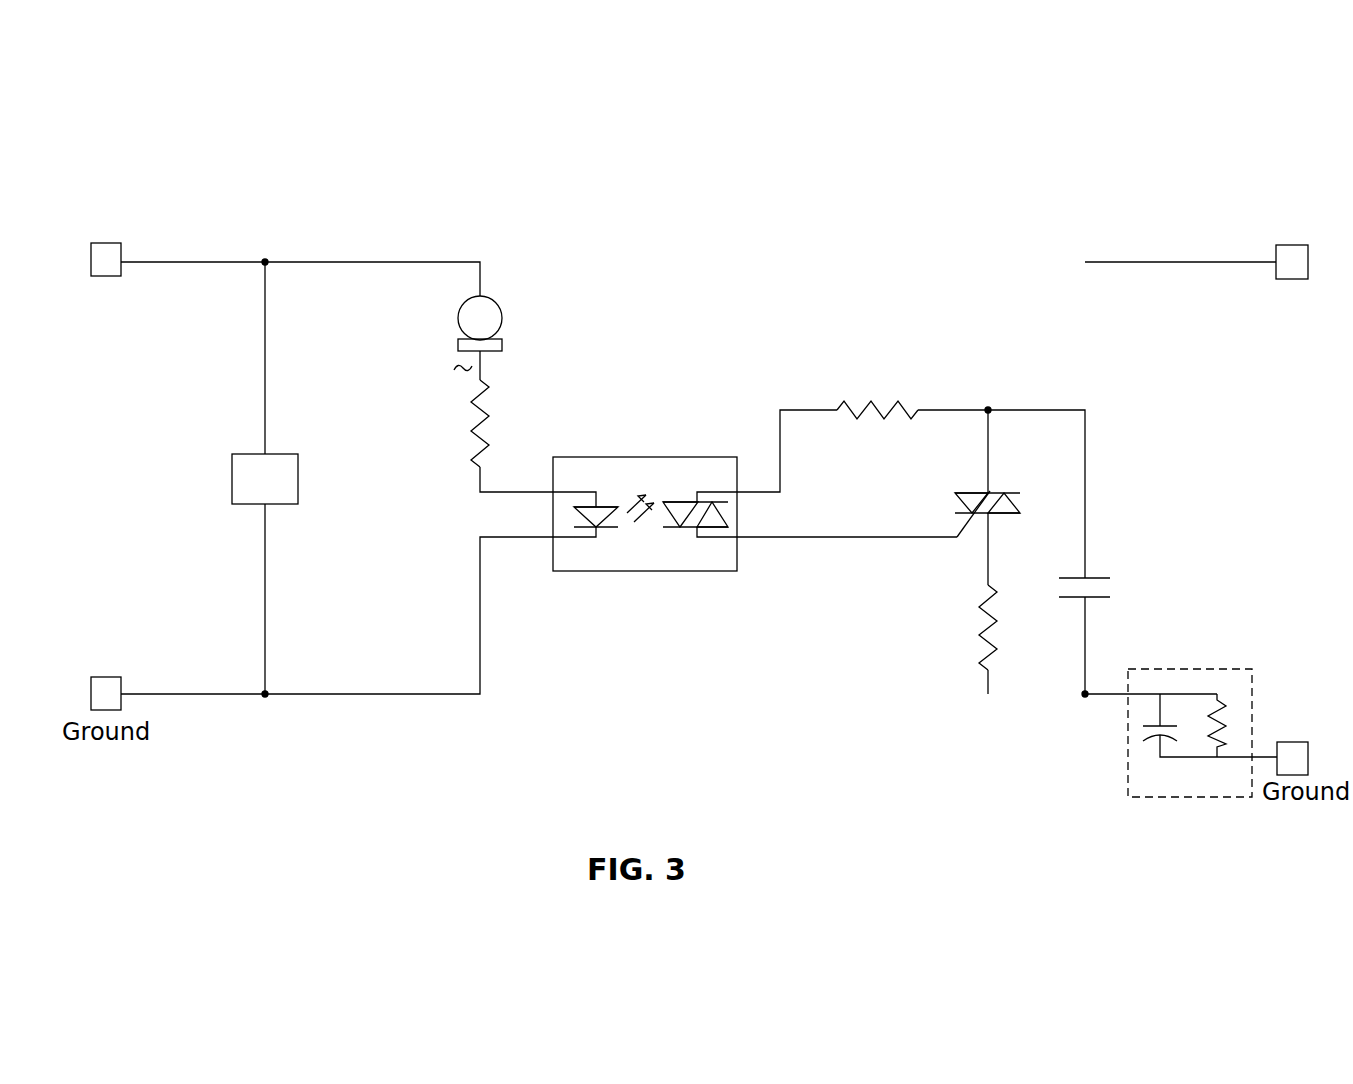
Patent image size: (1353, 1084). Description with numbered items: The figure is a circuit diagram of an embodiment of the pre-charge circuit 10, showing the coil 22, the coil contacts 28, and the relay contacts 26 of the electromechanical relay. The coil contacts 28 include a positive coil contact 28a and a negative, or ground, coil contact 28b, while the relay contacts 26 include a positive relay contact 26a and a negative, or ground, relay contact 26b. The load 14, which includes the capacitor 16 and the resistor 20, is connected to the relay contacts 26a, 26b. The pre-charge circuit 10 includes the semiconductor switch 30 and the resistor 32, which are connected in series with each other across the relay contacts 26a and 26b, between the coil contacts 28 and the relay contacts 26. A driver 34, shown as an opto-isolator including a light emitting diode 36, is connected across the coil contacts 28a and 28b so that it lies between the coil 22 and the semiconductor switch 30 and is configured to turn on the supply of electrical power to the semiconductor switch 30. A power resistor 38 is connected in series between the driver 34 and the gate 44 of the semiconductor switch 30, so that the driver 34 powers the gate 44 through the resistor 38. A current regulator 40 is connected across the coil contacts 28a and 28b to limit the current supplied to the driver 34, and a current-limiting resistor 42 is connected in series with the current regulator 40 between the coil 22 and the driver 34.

The pre-charge circuit 10 is at (843, 165).
The load 14 is at (1181, 766).
The capacitor 16 is at (1143, 730).
The resistor 20 is at (1226, 720).
The coil 22 is at (298, 490).
The relay contacts 26 is at (1091, 589).
The positive relay contact 26a is at (1100, 578).
The negative relay contact 26b is at (1100, 598).
The coil contacts 28 is at (285, 478).
The positive coil contact 28a is at (267, 452).
The negative coil contact 28b is at (265, 508).
The semiconductor switch 30 is at (987, 488).
The resistor 32 is at (985, 627).
The driver 34 is at (640, 556).
The light emitting diode 36 is at (603, 535).
The resistor 38 is at (892, 410).
The current regulator 40 is at (503, 318).
The resistor 42 is at (487, 406).
The gate 44 is at (977, 485).